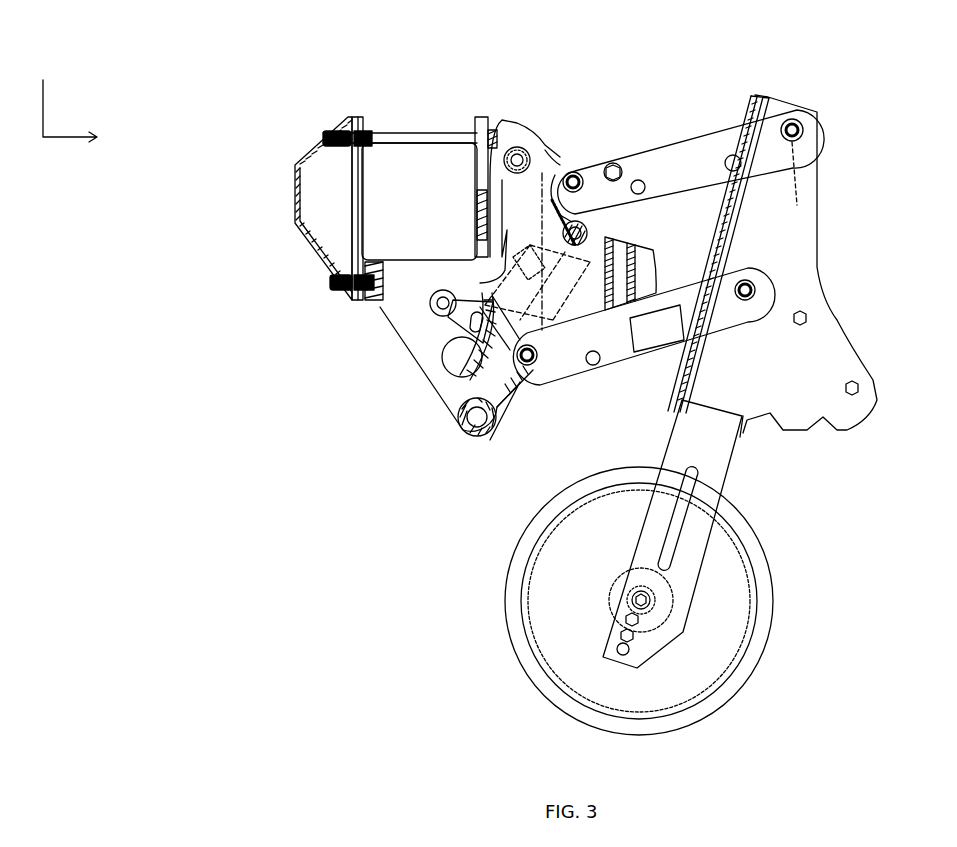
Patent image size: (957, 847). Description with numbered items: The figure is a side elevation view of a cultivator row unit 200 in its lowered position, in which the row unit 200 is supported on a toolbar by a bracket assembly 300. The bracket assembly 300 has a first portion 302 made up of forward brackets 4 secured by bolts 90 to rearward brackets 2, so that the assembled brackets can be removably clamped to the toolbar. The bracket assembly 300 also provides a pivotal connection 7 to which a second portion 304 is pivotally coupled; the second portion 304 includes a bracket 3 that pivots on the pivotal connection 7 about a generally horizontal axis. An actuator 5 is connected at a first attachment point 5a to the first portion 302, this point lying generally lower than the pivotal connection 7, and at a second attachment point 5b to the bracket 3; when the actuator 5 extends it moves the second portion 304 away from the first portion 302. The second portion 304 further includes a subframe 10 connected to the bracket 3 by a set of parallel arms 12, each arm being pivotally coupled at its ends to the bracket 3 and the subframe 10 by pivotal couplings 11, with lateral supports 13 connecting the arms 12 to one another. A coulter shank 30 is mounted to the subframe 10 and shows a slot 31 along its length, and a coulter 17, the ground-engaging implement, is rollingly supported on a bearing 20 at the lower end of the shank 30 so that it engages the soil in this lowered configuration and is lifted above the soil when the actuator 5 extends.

The cultivator row unit 200 is at (59, 100).
The bracket assembly 300 is at (268, 74).
The bolts 90 is at (431, 135).
The bracket 3 is at (515, 198).
The forward brackets 4 is at (298, 250).
The first portion 302 is at (383, 327).
The rearward brackets 2 is at (410, 325).
The pivotal connection 7 is at (516, 148).
The second portion 304 is at (564, 145).
The pivotal couplings 11 is at (582, 175).
The lateral supports 13 is at (610, 163).
The parallel arms 12 is at (706, 140).
The subframe 10 is at (803, 253).
The second attachment point 5b is at (590, 222).
The actuator 5 is at (517, 383).
The first attachment point 5a is at (458, 428).
The coulter shank 30 is at (707, 446).
The adjustment slot 31 is at (672, 530).
The bearing 20 is at (643, 600).
The coulter 17 is at (770, 578).